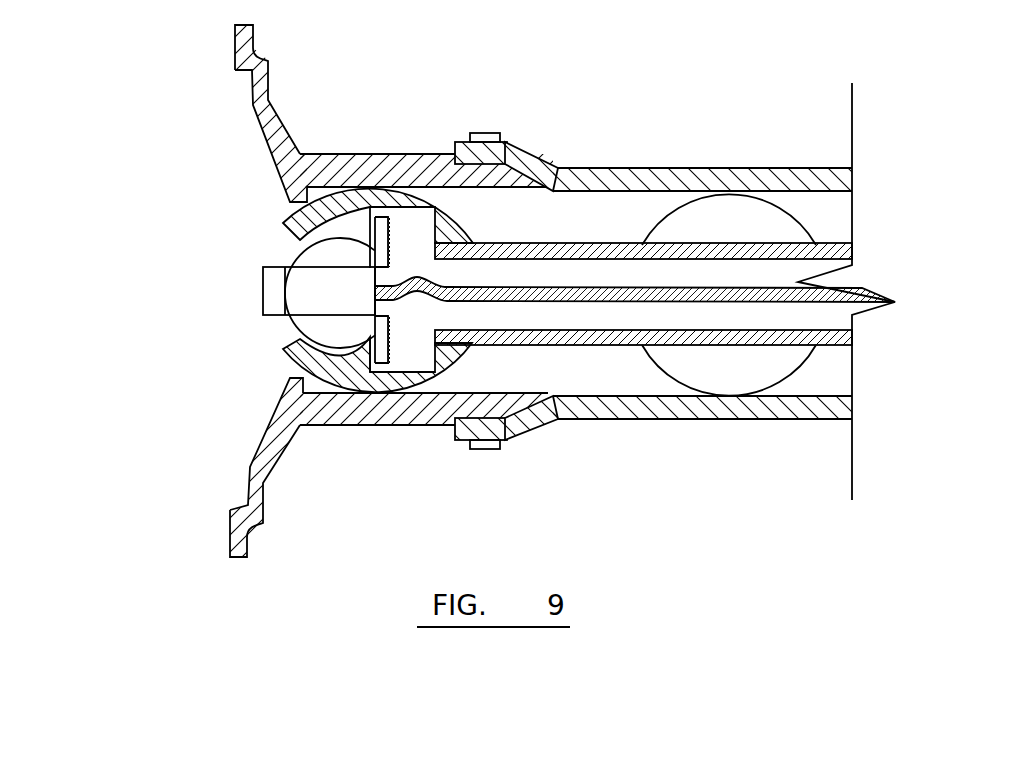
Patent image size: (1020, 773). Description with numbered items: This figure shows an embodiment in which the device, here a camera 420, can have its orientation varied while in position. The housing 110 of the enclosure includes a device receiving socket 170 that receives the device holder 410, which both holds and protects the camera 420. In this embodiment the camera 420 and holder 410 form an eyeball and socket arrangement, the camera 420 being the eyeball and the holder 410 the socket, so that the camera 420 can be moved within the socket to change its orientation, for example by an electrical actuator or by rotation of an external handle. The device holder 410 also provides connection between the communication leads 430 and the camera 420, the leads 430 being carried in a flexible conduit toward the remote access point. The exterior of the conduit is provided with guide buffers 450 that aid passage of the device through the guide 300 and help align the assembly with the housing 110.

The housing 110 is at (277, 440).
The device receiving socket 170 is at (413, 187).
The guide 300 is at (613, 175).
The device holder 410 is at (452, 367).
The camera 420 is at (303, 289).
The communication leads 430 is at (550, 298).
The guide buffers 450 is at (735, 375).